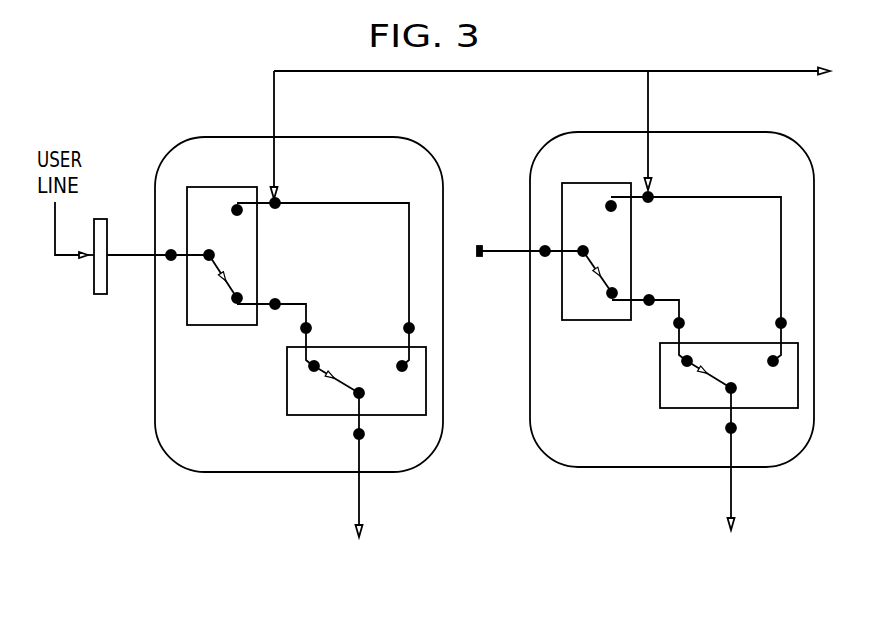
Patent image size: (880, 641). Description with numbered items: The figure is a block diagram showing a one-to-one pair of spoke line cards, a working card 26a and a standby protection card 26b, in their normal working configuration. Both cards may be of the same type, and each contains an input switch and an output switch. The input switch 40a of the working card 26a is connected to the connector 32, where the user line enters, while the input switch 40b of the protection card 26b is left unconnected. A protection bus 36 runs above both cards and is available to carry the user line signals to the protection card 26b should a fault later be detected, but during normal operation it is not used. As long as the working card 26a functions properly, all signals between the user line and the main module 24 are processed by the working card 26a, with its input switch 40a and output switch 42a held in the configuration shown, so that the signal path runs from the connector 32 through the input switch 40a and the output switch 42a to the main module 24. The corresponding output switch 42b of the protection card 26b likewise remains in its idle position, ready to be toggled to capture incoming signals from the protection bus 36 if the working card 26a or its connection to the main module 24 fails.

The main module 24 is at (550, 502).
The working card 26a is at (175, 151).
The protection card 26b is at (549, 144).
The connector 32 is at (110, 232).
The protection bus 36 is at (735, 70).
The input switch 40a is at (222, 326).
The input switch 40b is at (592, 321).
The output switch 42a is at (290, 416).
The output switch 42b is at (663, 410).